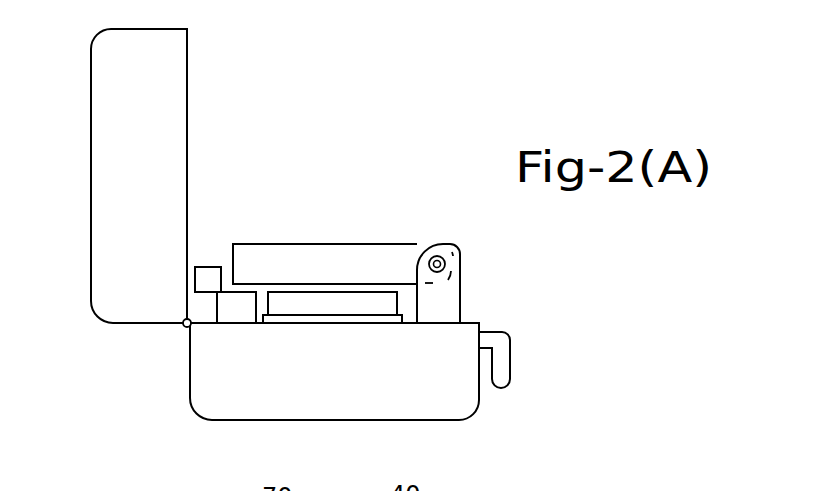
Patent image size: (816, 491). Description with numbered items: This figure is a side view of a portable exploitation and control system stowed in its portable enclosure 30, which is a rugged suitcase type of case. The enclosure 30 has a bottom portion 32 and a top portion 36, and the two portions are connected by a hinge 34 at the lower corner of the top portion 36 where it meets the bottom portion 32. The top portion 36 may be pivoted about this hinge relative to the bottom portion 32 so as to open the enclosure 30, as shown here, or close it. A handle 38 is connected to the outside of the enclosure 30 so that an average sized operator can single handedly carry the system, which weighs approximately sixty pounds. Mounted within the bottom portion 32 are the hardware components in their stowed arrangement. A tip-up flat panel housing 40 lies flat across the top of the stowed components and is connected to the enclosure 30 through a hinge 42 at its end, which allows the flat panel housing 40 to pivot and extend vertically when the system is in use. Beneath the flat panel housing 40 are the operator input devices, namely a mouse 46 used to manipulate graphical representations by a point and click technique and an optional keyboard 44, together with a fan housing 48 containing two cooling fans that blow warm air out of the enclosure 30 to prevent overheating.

The enclosure 30 is at (157, 411).
The bottom portion 32 is at (327, 402).
The hinge pin 34 is at (183, 327).
The top portion 36 is at (90, 150).
The handle 38 is at (510, 364).
The tip-up flat panel housing 40 is at (390, 262).
The hinge 42 is at (445, 264).
The keyboard 44 is at (331, 305).
The mouse 46 is at (207, 267).
The fan housing 48 is at (240, 304).